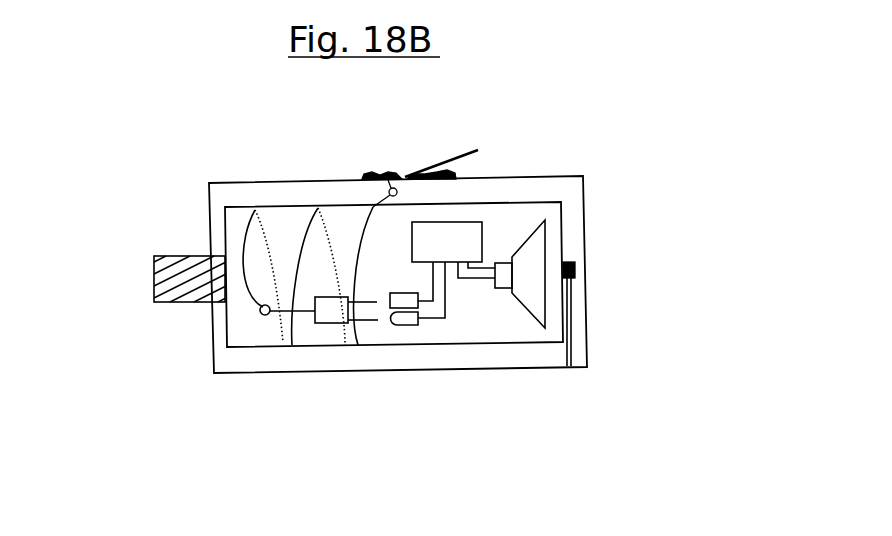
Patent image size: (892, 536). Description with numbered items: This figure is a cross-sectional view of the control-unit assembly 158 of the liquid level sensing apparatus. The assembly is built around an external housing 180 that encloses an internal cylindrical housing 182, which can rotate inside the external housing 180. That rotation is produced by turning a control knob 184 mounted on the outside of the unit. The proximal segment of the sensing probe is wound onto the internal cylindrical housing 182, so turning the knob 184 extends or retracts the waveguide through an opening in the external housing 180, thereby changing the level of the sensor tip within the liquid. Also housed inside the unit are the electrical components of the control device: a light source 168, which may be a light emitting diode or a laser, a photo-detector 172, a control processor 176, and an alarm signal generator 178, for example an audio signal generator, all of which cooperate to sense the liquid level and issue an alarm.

The transmitter unit 158 is at (612, 176).
The light source 168 is at (408, 323).
The photo-detector 172 is at (390, 306).
The control processor 176 is at (375, 174).
The alarm signal generator 178 is at (530, 265).
The external housing 180 is at (553, 172).
The internal cylindrical housing 182 is at (493, 343).
The control knob 184 is at (162, 257).